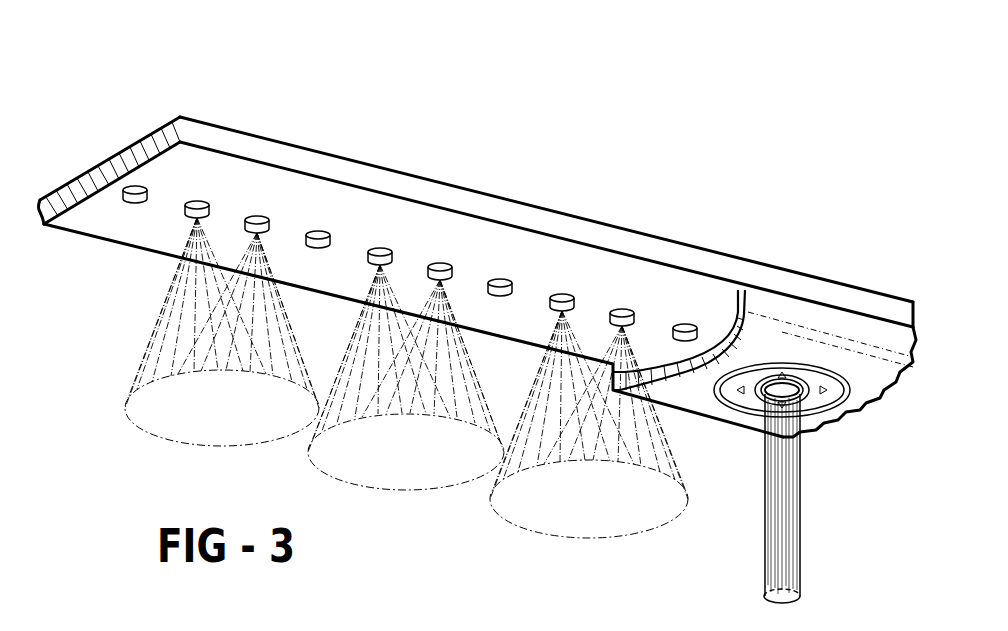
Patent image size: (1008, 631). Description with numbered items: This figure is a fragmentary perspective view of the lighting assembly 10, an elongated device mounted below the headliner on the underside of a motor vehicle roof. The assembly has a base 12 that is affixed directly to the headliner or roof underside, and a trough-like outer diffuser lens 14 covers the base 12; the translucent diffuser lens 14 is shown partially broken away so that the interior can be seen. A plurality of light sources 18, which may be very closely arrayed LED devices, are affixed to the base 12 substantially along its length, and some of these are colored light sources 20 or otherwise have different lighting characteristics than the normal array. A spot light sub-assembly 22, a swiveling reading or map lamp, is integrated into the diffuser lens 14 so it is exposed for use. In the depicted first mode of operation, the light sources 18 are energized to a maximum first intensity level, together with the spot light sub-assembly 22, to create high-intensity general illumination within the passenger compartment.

The lighting assembly 10 is at (766, 235).
The base 12 is at (188, 131).
The outer diffuser lens 14 is at (866, 375).
The light sources 18 is at (257, 216).
The colored light sources 20 is at (135, 203).
The spot light sub-assembly 22 is at (826, 419).